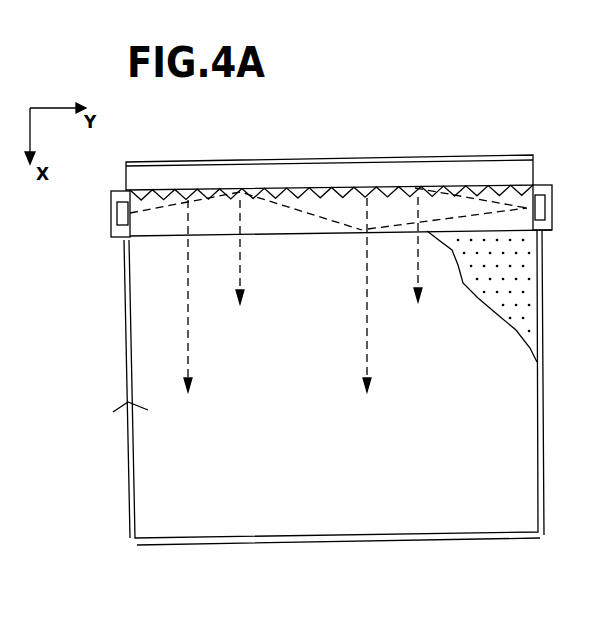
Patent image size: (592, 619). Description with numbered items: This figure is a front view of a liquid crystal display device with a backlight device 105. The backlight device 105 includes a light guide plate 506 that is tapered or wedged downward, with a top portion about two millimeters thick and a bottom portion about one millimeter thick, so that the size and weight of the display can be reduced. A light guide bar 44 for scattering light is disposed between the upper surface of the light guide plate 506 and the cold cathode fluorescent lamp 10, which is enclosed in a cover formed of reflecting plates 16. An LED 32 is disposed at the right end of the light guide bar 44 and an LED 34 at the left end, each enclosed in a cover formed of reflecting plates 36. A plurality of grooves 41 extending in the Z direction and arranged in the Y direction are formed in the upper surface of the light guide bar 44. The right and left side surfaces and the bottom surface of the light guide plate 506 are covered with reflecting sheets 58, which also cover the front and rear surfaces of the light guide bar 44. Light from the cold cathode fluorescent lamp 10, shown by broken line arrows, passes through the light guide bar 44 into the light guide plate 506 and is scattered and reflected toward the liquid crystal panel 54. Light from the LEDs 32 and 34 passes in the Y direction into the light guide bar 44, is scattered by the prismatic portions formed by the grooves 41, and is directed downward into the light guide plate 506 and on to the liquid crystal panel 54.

The cold cathode fluorescent lamp 10 is at (393, 172).
The reflecting plates 16 is at (483, 161).
The grooves 41 is at (300, 189).
The LED 34 is at (117, 213).
The reflecting plates 36 is at (552, 205).
The LED 32 is at (541, 219).
The light guide bar 44 is at (146, 228).
The liquid crystal panel 54 is at (513, 290).
The reflecting sheets 58 is at (127, 335).
The light guide plate 506 is at (107, 416).
The backlight device 105 is at (115, 484).